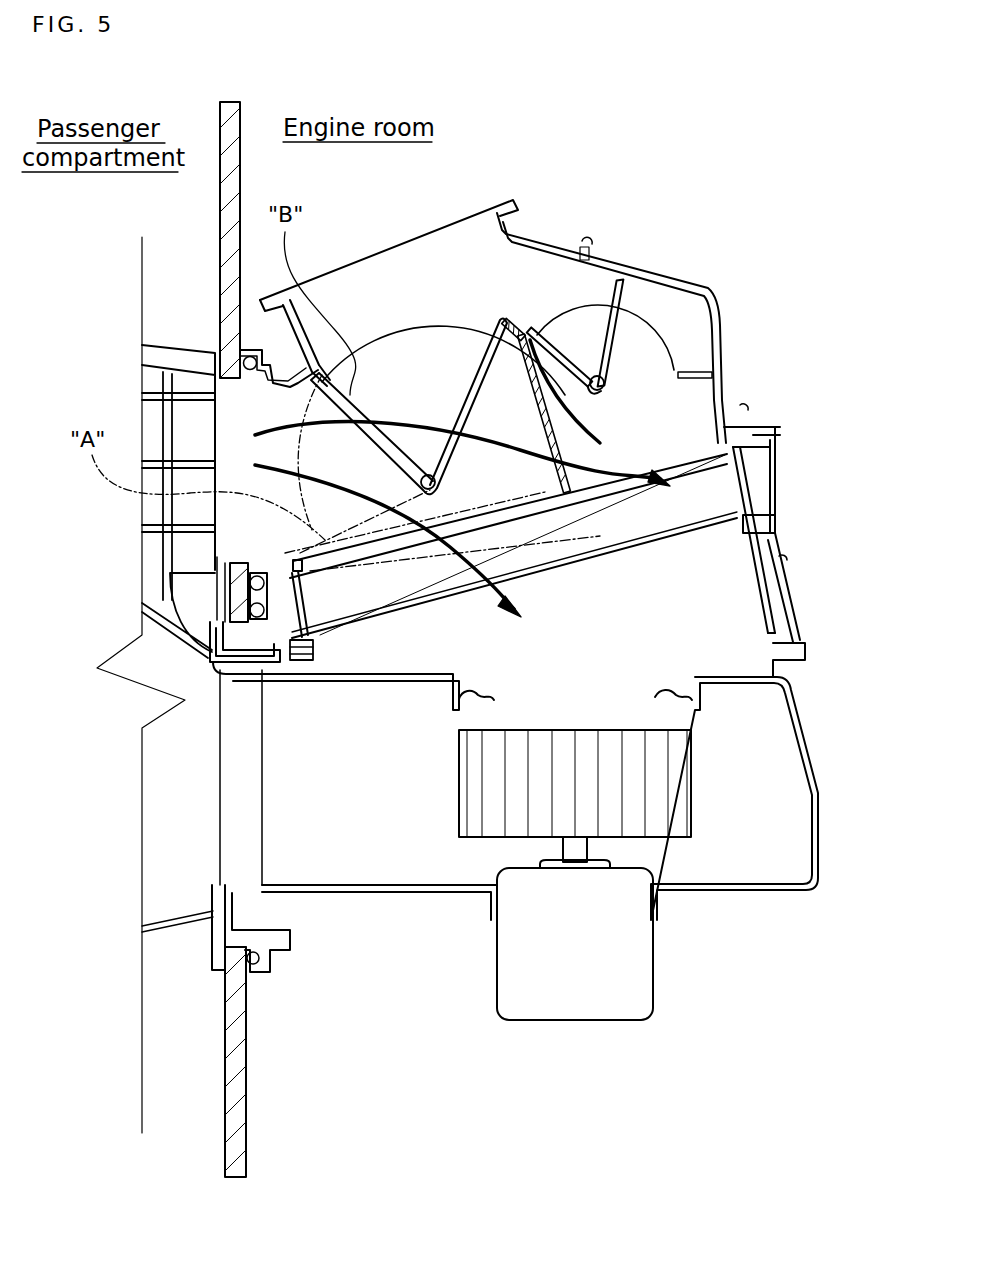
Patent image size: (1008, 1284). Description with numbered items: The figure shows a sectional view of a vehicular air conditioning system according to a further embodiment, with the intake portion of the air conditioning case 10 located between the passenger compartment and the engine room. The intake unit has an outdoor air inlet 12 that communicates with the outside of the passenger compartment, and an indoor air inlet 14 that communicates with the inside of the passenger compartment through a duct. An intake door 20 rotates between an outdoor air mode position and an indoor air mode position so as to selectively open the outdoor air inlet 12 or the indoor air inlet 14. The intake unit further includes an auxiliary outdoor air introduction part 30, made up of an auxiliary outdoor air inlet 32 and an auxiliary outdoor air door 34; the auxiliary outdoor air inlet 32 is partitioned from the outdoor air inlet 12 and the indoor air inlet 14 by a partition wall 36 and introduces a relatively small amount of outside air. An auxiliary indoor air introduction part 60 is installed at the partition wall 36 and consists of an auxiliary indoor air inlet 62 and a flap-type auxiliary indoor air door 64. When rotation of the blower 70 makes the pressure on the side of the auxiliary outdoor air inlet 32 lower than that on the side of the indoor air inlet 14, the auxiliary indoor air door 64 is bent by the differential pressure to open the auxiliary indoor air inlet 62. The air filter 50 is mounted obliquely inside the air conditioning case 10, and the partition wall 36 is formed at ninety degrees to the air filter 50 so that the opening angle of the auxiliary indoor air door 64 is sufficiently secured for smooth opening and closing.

The air conditioning case 10 is at (822, 755).
The outdoor air inlet 12 is at (466, 280).
The indoor air inlet 14 is at (233, 427).
The intake door 20 is at (390, 356).
The auxiliary outdoor air introduction part 30 is at (688, 192).
The auxiliary outdoor air inlet 32 is at (540, 283).
The auxiliary outdoor air door 34 is at (597, 305).
The partition wall 36 is at (560, 500).
The air filter 50 is at (687, 523).
The auxiliary indoor air introduction part 60 is at (795, 312).
The auxiliary indoor air inlet 62 is at (557, 430).
The auxiliary indoor air door 64 is at (615, 387).
The blower 70 is at (683, 790).